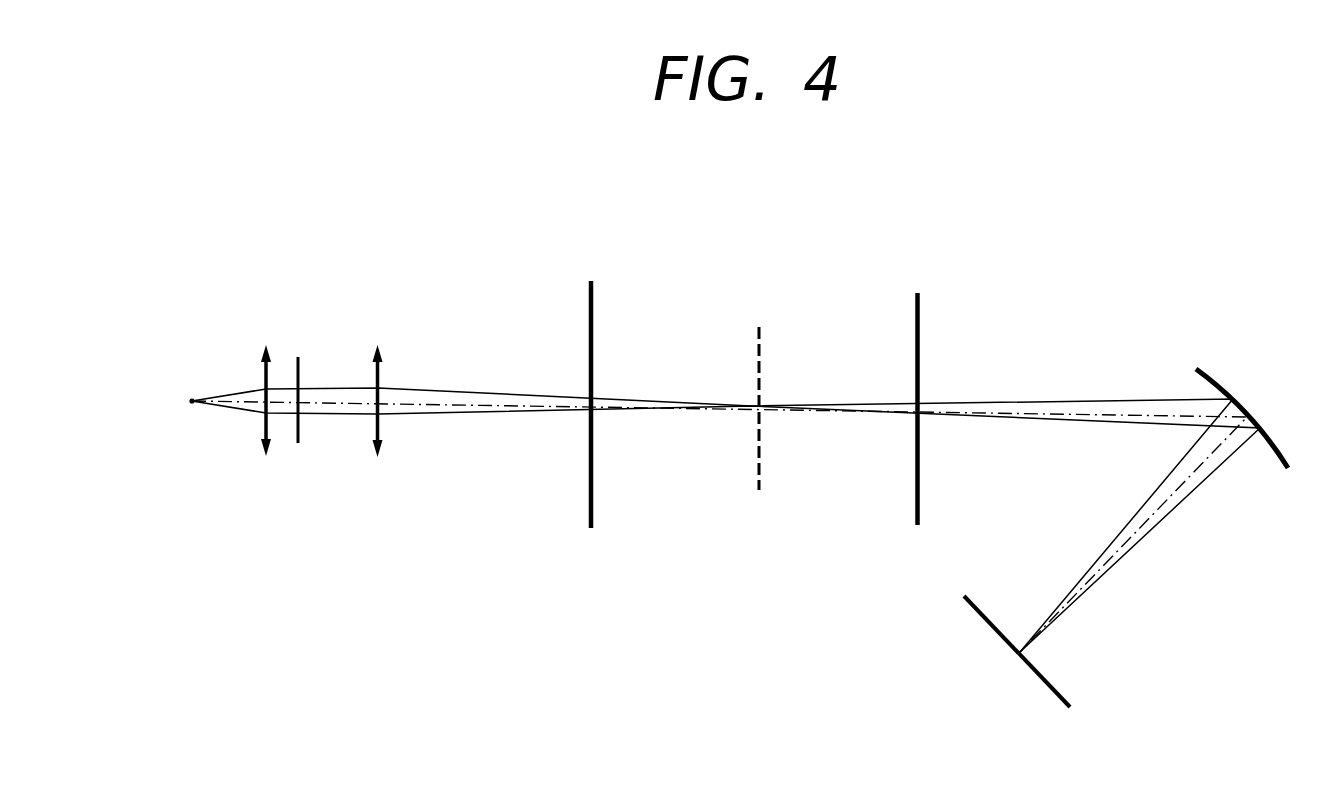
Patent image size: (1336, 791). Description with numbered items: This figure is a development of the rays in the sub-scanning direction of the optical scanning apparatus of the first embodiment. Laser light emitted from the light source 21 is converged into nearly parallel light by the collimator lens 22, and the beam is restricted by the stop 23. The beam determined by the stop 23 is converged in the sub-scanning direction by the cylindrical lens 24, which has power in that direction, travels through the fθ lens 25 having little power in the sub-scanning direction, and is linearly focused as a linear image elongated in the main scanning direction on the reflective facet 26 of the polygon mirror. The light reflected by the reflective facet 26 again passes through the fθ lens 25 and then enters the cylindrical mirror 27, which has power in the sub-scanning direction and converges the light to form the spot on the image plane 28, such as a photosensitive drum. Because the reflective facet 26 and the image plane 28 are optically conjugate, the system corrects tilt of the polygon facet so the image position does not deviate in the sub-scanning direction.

The laser light source 21 is at (192, 397).
The collimator lens 22 is at (271, 348).
The stop 23 is at (302, 368).
The cylindrical lens 24 is at (382, 358).
The fθ lens 25 is at (593, 295).
The reflective facet of the scanning mirror 26 is at (761, 340).
The cylindrical mirror 27 is at (1215, 378).
The image plane 28 is at (1062, 697).